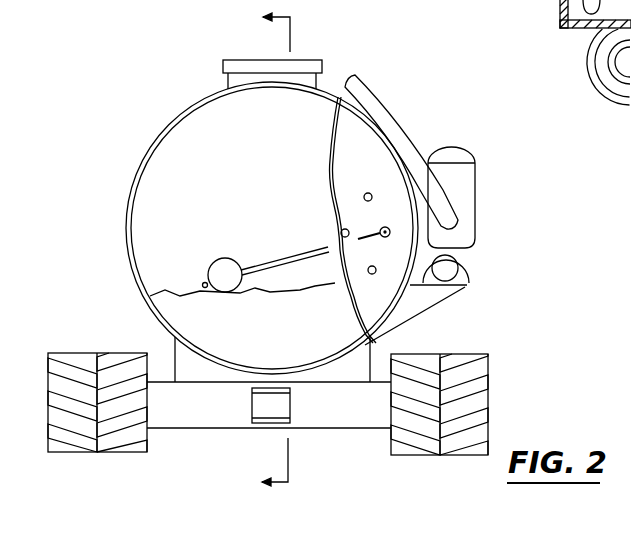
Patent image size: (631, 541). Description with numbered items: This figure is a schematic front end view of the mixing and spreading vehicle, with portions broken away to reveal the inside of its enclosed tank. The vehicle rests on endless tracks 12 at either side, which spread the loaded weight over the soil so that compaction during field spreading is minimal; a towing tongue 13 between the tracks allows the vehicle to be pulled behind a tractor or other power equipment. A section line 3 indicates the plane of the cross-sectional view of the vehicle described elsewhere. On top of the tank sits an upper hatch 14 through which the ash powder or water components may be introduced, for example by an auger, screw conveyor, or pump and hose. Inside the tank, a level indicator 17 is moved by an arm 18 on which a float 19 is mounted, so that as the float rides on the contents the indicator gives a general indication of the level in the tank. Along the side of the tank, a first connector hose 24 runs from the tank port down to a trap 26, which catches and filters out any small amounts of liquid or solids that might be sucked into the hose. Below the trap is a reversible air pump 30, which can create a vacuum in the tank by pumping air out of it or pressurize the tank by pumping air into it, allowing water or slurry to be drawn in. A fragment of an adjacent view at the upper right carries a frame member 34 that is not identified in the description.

The section line 3- 3 is at (261, 250).
The endless tracks 12 is at (489, 385).
The towing tongue 13 is at (252, 398).
The upper hatch 14 is at (233, 58).
The level indicator 17 is at (374, 228).
The arm 18 is at (292, 230).
The float 19 is at (238, 238).
The first connector hose 24 is at (380, 94).
The trap 26 is at (478, 207).
The reversible air pump 30 is at (470, 272).
The frame member 34 is at (538, 0).